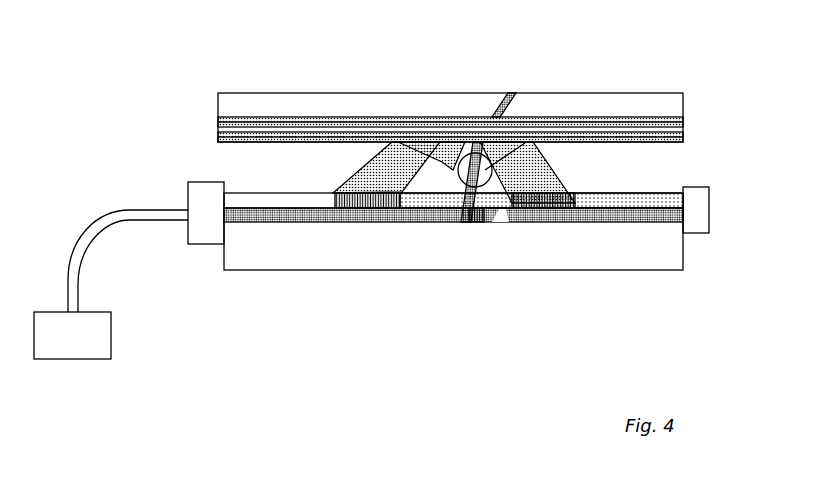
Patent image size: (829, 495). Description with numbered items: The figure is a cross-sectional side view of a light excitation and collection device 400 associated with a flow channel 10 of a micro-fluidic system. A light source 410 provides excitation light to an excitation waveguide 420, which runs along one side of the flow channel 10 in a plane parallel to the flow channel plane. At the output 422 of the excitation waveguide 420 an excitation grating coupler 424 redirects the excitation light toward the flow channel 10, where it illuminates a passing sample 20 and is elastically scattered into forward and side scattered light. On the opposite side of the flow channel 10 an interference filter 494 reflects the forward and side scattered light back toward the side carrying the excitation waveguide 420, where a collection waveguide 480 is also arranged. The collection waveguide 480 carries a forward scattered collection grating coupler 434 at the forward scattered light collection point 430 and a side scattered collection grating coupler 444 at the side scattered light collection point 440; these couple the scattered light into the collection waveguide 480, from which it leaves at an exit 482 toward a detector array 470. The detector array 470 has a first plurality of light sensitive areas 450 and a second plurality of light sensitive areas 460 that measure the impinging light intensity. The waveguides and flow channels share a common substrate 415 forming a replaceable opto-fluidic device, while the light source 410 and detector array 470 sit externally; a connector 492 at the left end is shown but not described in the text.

The light excitation and collection device 400 is at (168, 82).
The flow channel 10 is at (283, 162).
The interference filter 494 is at (457, 123).
The passing sample 20 is at (456, 163).
The forward scattered light collection point 430 is at (533, 190).
The side scattered light collection point 440 is at (352, 178).
The side scattered collection grating coupler 444 is at (367, 210).
The forward scattered collection grating coupler 434 is at (556, 222).
The collection waveguide 480 is at (492, 222).
The exit 482 is at (660, 212).
The excitation grating coupler 424 is at (440, 222).
The output 422 is at (460, 222).
The excitation waveguide 420 is at (258, 215).
The common substrate 415 is at (278, 262).
The left connector 492 is at (245, 203).
The light source 410 is at (55, 320).
The second plurality of light sensitive areas 460 is at (670, 190).
The detector array 470 is at (705, 213).
The first plurality of light sensitive areas 450 is at (679, 222).